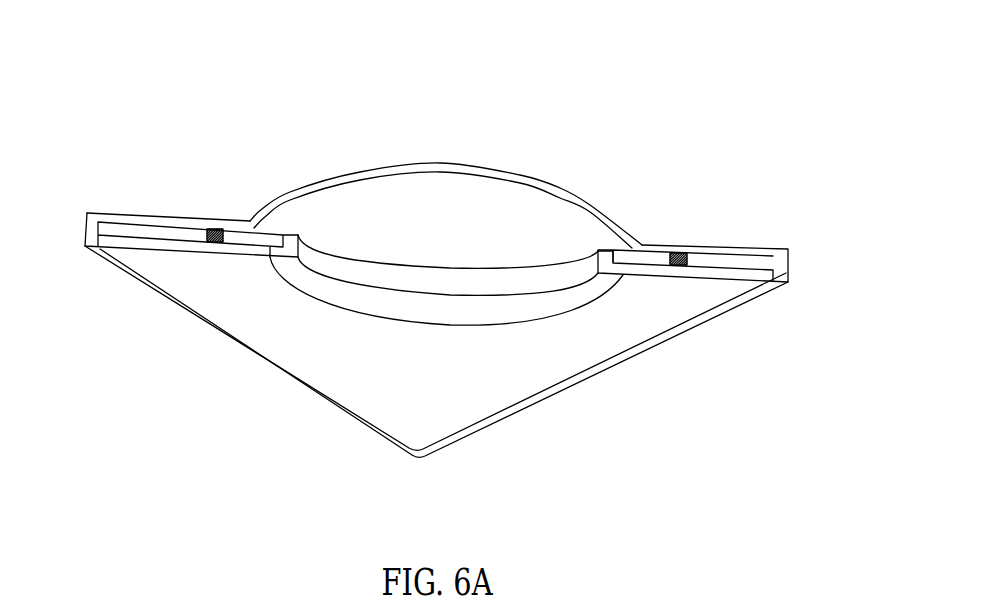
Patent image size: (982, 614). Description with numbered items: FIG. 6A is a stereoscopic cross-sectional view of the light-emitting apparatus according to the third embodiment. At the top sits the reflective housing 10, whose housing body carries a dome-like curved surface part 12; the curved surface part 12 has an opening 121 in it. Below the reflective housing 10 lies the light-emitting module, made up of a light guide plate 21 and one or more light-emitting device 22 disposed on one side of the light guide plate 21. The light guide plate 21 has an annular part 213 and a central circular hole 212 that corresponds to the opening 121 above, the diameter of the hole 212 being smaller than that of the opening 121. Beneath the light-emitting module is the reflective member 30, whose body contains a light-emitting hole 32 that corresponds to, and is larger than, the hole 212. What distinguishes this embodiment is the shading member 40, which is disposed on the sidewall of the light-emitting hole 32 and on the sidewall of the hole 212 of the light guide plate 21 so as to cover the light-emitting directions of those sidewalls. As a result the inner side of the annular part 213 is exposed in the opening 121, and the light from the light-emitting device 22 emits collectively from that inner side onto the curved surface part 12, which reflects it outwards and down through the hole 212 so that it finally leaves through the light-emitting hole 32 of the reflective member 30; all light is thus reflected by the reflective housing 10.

The reflective housing 10 is at (450, 141).
The curved surface part 12 is at (497, 164).
The opening 121 is at (251, 215).
The light guide plate 21 is at (237, 232).
The hole 212 is at (617, 241).
The annular part 213 is at (282, 215).
The light-emitting device 22 is at (207, 230).
The reflective member 30 is at (340, 383).
The light-emitting hole 32 is at (261, 266).
The shading member 40 is at (347, 297).